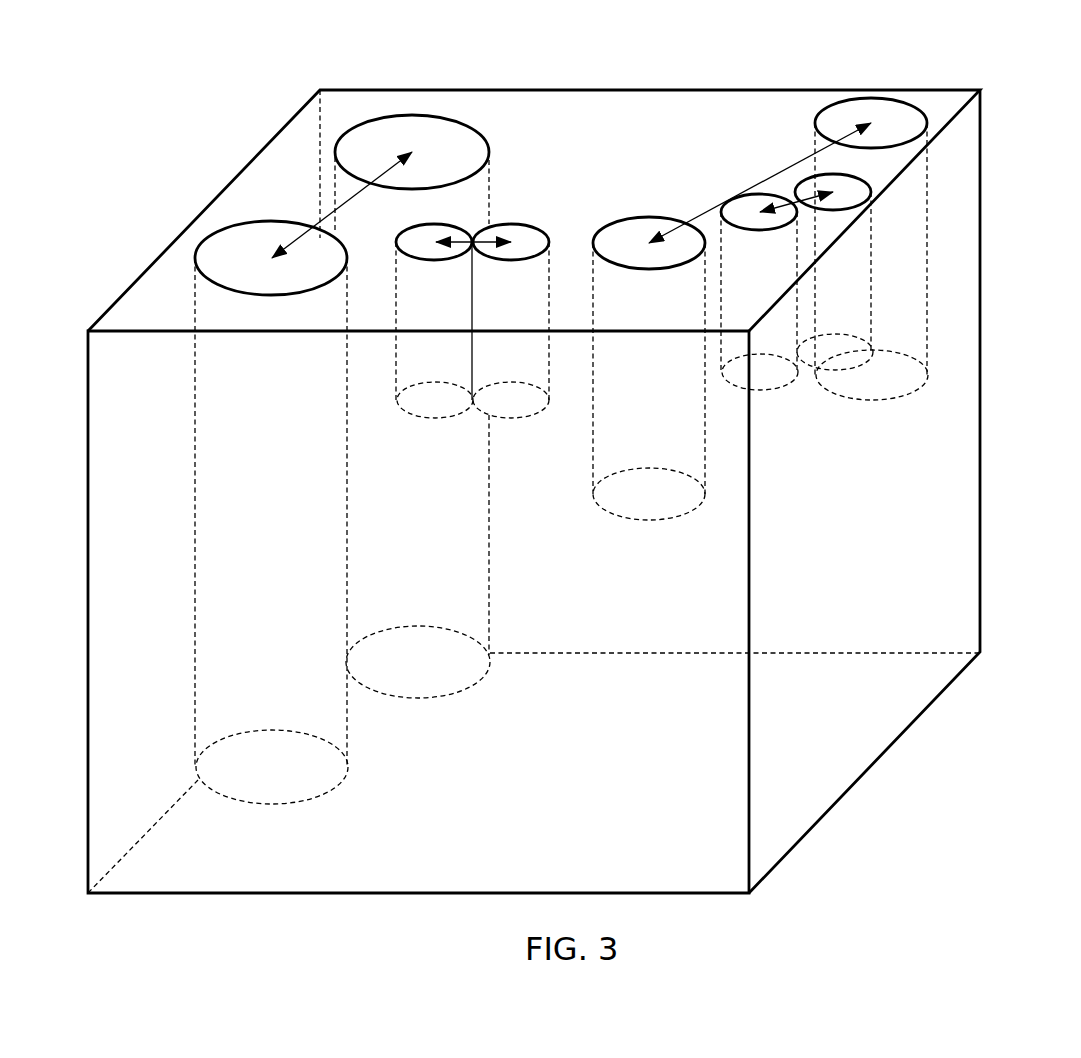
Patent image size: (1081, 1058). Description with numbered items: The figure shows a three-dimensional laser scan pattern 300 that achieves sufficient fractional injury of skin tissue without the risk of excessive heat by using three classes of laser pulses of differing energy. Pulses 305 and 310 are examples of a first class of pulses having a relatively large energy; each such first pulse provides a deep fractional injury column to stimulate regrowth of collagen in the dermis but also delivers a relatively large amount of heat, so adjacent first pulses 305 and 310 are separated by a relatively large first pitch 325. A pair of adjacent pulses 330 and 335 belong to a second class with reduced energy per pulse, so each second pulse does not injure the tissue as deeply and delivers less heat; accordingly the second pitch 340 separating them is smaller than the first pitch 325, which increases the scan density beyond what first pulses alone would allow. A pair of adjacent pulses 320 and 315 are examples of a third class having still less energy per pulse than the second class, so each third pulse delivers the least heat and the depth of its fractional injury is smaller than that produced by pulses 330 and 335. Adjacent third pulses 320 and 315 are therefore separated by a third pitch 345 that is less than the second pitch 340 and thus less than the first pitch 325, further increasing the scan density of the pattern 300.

The three-dimensional laser scan pattern 300 is at (197, 102).
The first pulse 305 is at (273, 803).
The first pulse 310 is at (428, 697).
The third pulse 315 is at (807, 367).
The third pulse 320 is at (753, 388).
The first pitch 325 is at (337, 207).
The second pulse 330 is at (705, 458).
The second pulse 335 is at (927, 248).
The second pitch 340 is at (762, 185).
The third pitch 345 is at (472, 311).